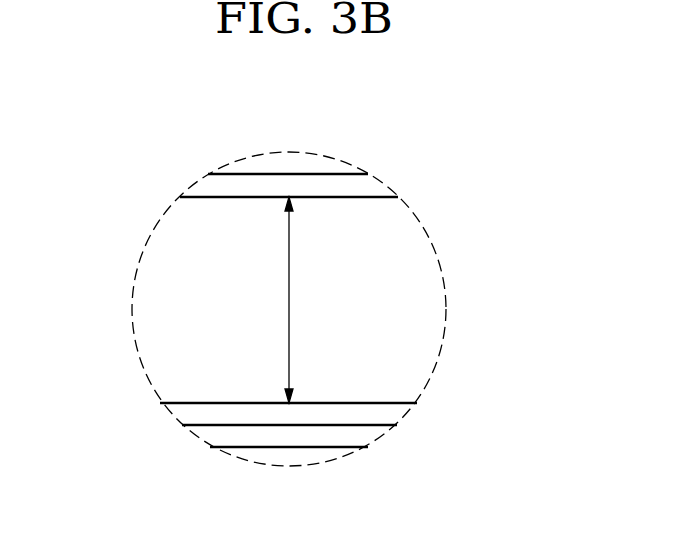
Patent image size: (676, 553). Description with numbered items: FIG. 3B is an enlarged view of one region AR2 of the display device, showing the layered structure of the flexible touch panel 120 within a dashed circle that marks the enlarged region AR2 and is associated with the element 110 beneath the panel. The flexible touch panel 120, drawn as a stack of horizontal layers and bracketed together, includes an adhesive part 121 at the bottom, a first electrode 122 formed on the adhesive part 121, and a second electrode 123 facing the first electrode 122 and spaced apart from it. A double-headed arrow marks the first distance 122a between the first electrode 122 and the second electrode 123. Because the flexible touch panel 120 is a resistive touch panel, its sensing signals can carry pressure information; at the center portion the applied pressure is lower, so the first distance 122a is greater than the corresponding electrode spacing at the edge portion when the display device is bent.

The substrate 110 is at (288, 466).
The region of the center portion AR2 is at (289, 312).
The flexible touch panel 120 is at (279, 311).
The adhesive part 121 is at (327, 439).
The first electrode 122 is at (250, 311).
The first distance 122a is at (289, 300).
The second electrode 123 is at (372, 179).